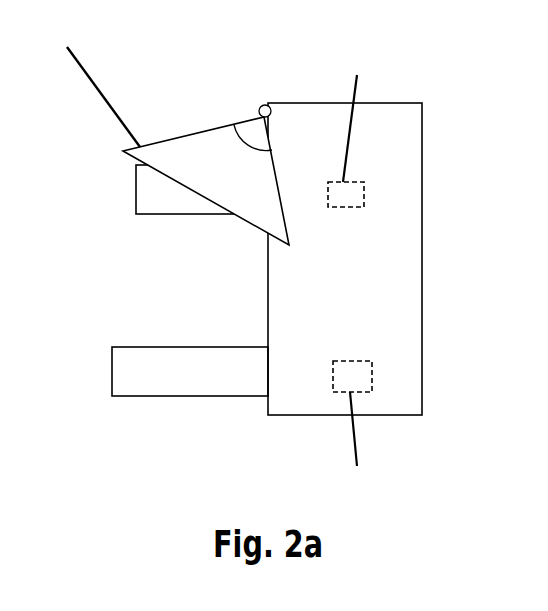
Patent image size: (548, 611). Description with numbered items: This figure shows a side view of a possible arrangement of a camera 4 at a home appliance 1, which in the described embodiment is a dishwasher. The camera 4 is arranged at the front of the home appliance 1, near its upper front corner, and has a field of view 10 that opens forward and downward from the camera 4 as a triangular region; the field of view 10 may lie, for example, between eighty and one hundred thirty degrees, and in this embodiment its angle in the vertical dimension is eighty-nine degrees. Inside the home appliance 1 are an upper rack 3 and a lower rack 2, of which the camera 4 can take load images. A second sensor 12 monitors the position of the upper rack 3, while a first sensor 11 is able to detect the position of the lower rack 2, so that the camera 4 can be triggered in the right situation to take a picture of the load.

The home appliance 1 is at (403, 127).
The lower rack 2 is at (128, 375).
The upper rack 3 is at (145, 190).
The camera 4 is at (265, 105).
The field of view 10 is at (190, 150).
The first sensor 11 is at (348, 378).
The second sensor 12 is at (343, 196).